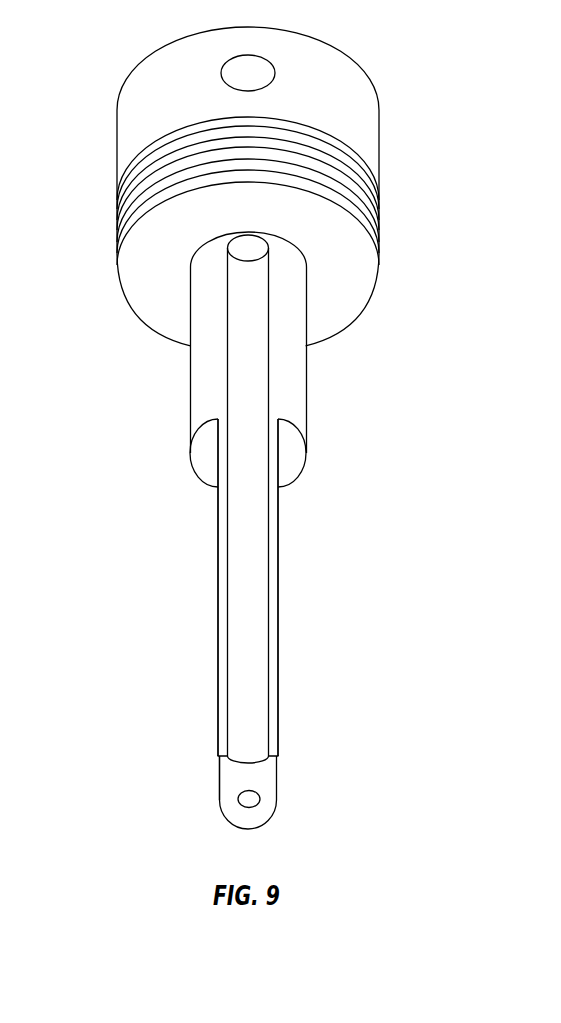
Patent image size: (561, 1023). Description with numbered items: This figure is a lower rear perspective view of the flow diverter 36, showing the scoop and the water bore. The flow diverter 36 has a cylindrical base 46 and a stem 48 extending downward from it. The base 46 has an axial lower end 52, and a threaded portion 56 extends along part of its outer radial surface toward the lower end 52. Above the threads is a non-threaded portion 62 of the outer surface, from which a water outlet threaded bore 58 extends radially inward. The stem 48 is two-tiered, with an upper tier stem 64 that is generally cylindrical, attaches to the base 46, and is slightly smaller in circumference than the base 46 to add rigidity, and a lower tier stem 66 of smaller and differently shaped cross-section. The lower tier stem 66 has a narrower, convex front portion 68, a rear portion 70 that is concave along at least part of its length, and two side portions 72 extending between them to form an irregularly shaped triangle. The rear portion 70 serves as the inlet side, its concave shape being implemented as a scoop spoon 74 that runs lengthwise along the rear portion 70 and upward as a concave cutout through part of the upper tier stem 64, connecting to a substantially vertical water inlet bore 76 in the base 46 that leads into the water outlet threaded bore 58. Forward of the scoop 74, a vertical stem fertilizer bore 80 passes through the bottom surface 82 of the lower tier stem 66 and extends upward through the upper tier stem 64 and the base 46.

The flow diverter 36 is at (102, 52).
The cylindrical base 46 is at (302, 62).
The water outlet threaded bore 58 is at (247, 72).
The non-threaded portion 62 is at (363, 128).
The threaded portion 56 is at (358, 195).
The axial lower end 52 is at (160, 293).
The stem 48 is at (170, 620).
The upper tier stem 64 is at (285, 373).
The rear portion 70 is at (250, 512).
The scoop spoon 74 is at (248, 587).
The water inlet bore 76 is at (247, 250).
The lower tier stem 66 is at (250, 568).
The side portions 72 is at (218, 782).
The front portion 68 is at (247, 828).
The bottom surface 82 is at (230, 798).
The vertical stem fertilizer bore 80 is at (250, 800).